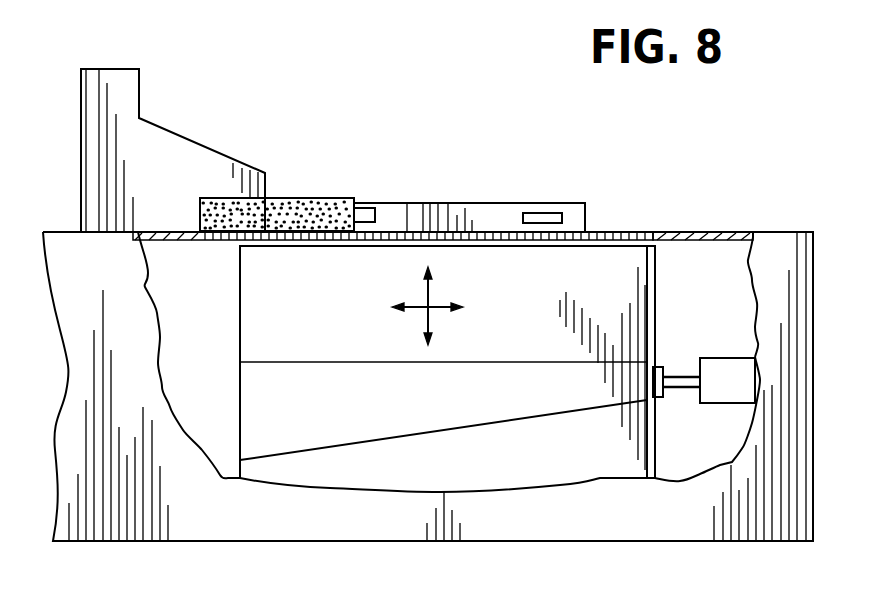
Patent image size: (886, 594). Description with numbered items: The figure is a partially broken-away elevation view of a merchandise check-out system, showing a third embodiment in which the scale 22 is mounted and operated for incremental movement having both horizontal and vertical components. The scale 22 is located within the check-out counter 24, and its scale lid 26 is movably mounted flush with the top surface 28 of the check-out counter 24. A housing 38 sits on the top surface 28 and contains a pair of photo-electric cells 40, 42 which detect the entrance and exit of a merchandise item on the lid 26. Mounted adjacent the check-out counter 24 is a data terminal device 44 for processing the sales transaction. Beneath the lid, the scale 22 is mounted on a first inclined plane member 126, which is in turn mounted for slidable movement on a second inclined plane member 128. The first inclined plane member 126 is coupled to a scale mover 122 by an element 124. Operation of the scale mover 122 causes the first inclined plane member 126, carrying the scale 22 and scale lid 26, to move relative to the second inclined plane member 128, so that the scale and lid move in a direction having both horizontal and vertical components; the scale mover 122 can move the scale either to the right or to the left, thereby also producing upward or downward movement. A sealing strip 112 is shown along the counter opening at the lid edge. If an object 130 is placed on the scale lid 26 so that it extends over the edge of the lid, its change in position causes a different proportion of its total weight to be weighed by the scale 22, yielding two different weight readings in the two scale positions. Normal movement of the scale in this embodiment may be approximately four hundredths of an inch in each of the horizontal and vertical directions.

The scale 22 is at (260, 292).
The check-out counter 24 is at (292, 522).
The scale lid 26 is at (615, 233).
The top surface 28 is at (773, 233).
The housing 38 is at (462, 203).
The photo-electric cell 40 is at (372, 207).
The photo-electric cell 42 is at (542, 213).
The data terminal device 44 is at (120, 82).
The gasket 112 is at (667, 233).
The scale mover 122 is at (730, 405).
The element 124 is at (677, 373).
The first inclined plane member 126 is at (260, 382).
The second inclined plane member 128 is at (475, 468).
The object 130 is at (290, 198).